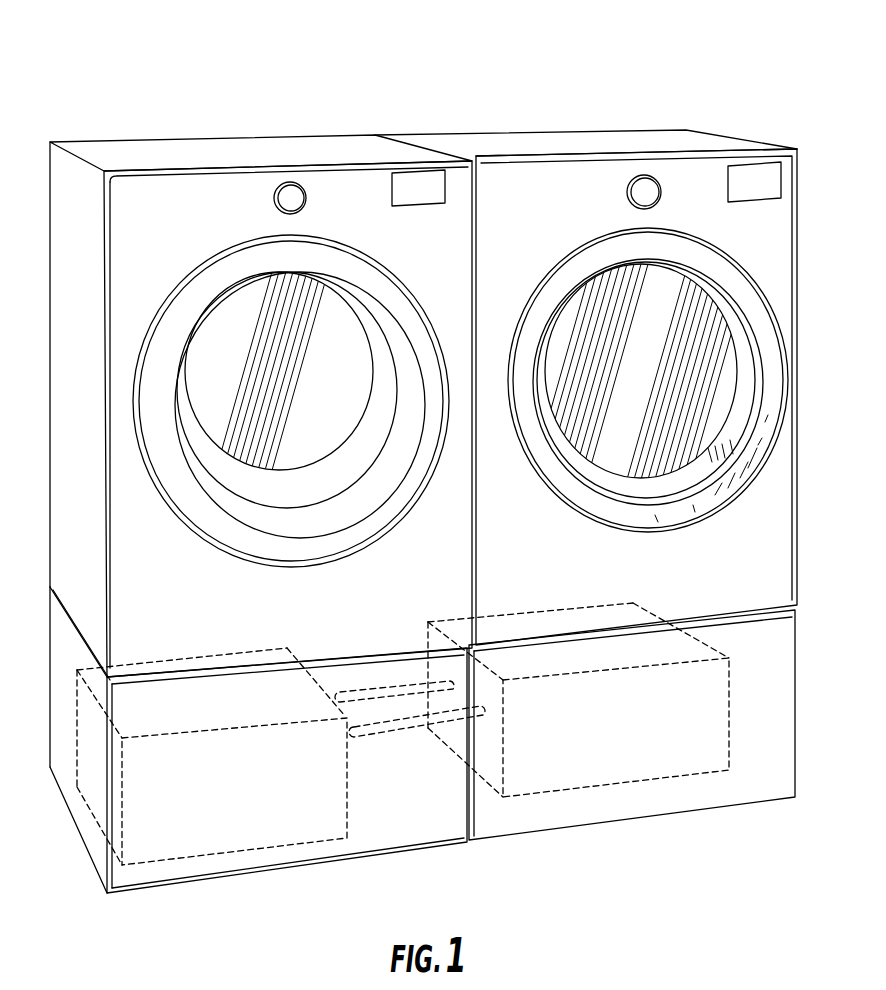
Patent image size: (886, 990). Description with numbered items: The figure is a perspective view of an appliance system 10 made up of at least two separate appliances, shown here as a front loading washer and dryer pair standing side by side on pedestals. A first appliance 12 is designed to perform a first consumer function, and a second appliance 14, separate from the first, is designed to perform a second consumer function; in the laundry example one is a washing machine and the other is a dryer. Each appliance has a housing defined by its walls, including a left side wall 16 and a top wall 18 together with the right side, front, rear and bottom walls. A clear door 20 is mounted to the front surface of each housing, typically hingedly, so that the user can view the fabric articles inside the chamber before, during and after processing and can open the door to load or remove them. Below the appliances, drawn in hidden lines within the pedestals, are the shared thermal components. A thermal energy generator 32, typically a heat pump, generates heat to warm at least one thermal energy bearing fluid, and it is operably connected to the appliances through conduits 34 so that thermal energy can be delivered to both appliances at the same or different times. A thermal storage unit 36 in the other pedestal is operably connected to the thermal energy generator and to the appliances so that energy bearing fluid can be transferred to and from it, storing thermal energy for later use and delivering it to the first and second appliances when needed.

The appliance system 10 is at (483, 80).
The first appliance 12 is at (799, 212).
The second appliance 14 is at (51, 311).
The left side wall 16 is at (78, 449).
The top wall 18 is at (258, 138).
The clear door 20 is at (303, 399).
The thermal energy generator 32 is at (258, 802).
The conduits 34 is at (337, 703).
The thermal storage unit 36 is at (640, 747).